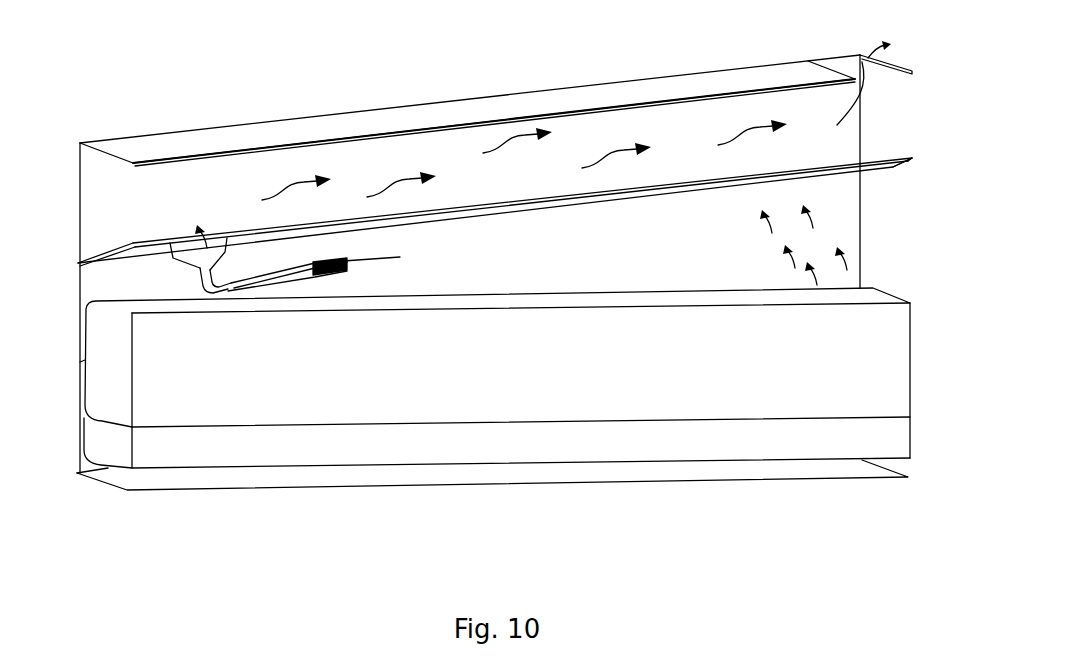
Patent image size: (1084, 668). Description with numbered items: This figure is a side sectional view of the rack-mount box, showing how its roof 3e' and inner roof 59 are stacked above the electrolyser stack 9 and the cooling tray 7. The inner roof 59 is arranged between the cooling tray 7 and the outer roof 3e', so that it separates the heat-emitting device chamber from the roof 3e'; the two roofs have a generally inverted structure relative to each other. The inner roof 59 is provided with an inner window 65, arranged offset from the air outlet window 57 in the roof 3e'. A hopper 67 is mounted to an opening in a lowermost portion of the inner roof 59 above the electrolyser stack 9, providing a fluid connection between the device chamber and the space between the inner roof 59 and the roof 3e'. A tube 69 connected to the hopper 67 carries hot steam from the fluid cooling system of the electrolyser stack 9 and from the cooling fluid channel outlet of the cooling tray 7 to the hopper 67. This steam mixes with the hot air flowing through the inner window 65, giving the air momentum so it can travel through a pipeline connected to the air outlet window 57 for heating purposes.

The roof 3e' is at (467, 103).
The air outlet window 57 is at (896, 85).
The inner roof 59 is at (910, 158).
The inner window 65 is at (802, 182).
The hopper 67 is at (173, 258).
The tube 69 is at (279, 278).
The electrolyser stack 9 is at (912, 370).
The cooling tray 7 is at (912, 440).